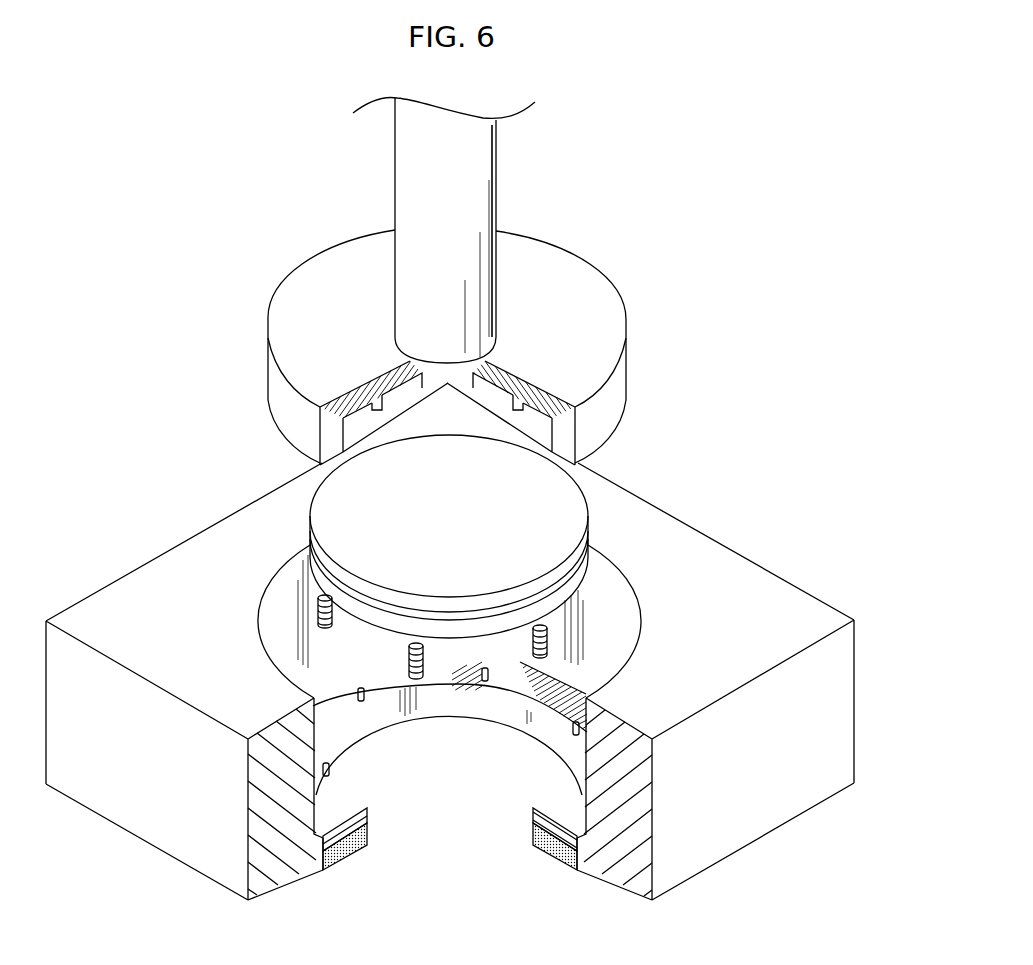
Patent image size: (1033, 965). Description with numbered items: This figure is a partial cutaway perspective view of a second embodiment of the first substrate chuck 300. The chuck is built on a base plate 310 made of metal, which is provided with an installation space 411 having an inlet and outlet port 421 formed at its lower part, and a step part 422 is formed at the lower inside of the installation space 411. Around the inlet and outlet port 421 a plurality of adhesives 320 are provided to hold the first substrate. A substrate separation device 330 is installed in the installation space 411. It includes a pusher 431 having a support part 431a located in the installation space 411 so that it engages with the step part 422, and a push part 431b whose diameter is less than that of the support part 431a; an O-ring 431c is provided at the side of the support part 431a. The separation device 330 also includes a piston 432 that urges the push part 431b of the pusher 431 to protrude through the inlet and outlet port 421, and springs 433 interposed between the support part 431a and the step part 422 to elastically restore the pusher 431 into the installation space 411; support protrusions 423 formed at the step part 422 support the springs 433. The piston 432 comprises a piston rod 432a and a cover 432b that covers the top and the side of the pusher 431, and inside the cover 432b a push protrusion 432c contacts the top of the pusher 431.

The first substrate chuck 300 is at (140, 175).
The base plate 310 is at (792, 609).
The adhesives 320 is at (577, 850).
The substrate separation device 330 is at (664, 399).
The installation space 411 is at (614, 611).
The inlet and outlet port 421 is at (388, 754).
The step part 422 is at (540, 688).
The support protrusions 423 is at (572, 735).
The pusher 431 is at (85, 456).
The support part 431a is at (330, 516).
The push part 431b is at (310, 632).
The O-ring 431c is at (318, 558).
The piston 432 is at (732, 192).
The piston rod 432a is at (483, 194).
The cover 432b is at (572, 395).
The push protrusion 432c is at (478, 366).
The springs 433 is at (356, 692).